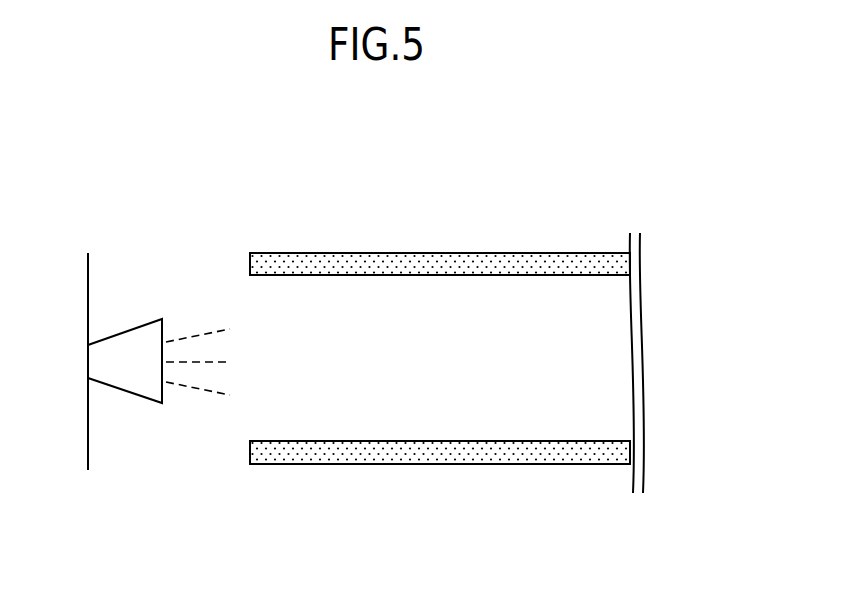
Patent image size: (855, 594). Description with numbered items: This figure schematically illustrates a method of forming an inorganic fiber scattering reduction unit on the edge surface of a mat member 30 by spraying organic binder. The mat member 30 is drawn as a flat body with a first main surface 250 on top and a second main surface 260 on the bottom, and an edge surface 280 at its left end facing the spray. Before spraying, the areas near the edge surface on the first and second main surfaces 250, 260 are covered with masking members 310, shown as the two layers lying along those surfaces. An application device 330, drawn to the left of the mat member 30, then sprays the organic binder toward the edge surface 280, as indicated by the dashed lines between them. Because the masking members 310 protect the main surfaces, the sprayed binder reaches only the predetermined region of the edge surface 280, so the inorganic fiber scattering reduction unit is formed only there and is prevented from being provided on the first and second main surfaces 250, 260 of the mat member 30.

The mat member 30 is at (585, 211).
The first main surface 250 is at (413, 275).
The second main surface 260 is at (413, 442).
The edge surface 280 is at (250, 285).
The masking member 310 is at (488, 253).
The application device 330 is at (131, 395).